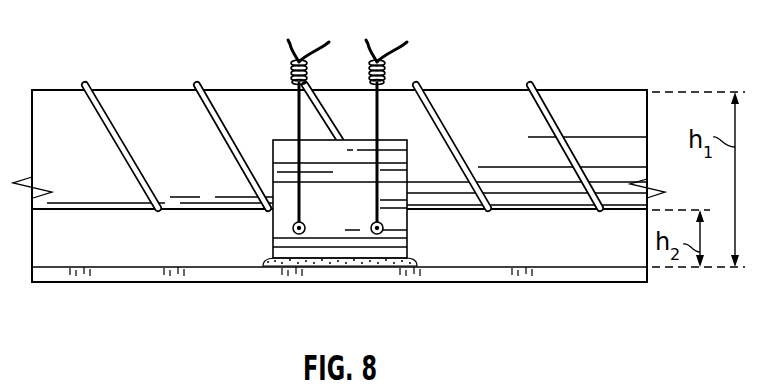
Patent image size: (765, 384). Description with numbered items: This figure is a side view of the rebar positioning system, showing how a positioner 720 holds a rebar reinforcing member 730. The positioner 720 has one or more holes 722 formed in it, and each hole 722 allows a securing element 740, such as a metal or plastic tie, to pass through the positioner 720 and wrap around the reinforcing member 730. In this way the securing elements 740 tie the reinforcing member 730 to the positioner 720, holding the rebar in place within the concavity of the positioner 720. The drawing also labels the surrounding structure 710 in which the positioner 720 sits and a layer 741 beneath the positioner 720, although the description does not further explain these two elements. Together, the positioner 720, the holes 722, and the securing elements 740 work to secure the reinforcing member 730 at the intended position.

The concrete slab 710 is at (133, 265).
The positioner 720 is at (401, 140).
The holes 722 is at (299, 234).
The reinforcing member 730 is at (242, 90).
The securing element 740 is at (380, 180).
The adhesive / bedding layer 741 is at (417, 258).